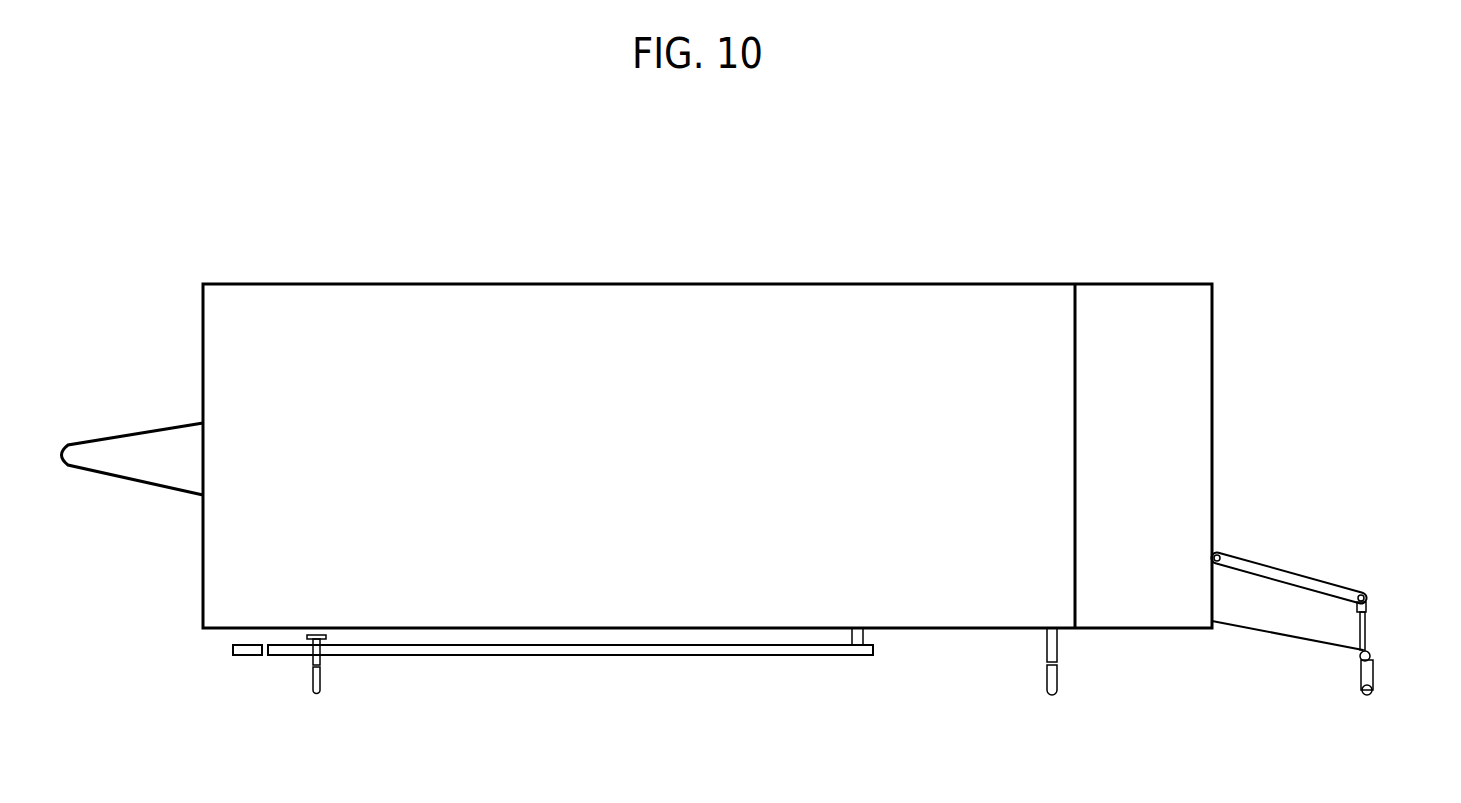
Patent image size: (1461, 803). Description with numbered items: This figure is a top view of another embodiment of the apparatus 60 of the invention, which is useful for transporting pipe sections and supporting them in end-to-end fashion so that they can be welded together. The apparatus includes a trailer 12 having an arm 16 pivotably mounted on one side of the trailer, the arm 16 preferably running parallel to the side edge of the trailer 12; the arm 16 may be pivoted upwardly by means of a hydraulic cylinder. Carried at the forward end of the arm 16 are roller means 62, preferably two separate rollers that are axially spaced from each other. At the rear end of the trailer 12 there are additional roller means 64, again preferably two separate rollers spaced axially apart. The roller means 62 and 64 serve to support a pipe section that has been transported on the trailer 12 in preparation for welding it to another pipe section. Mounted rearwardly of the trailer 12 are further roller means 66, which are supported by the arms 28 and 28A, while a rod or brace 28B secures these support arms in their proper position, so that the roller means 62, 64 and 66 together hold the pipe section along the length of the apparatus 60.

The trailer 12 is at (203, 612).
The arm 16 is at (620, 657).
The arm 28 is at (1277, 572).
The arm 28A is at (1370, 617).
The rod or brace 28B is at (1270, 637).
The apparatus 60 is at (663, 238).
The roller means 62 is at (311, 657).
The roller means 64 is at (1058, 648).
The roller means 66 is at (1376, 672).